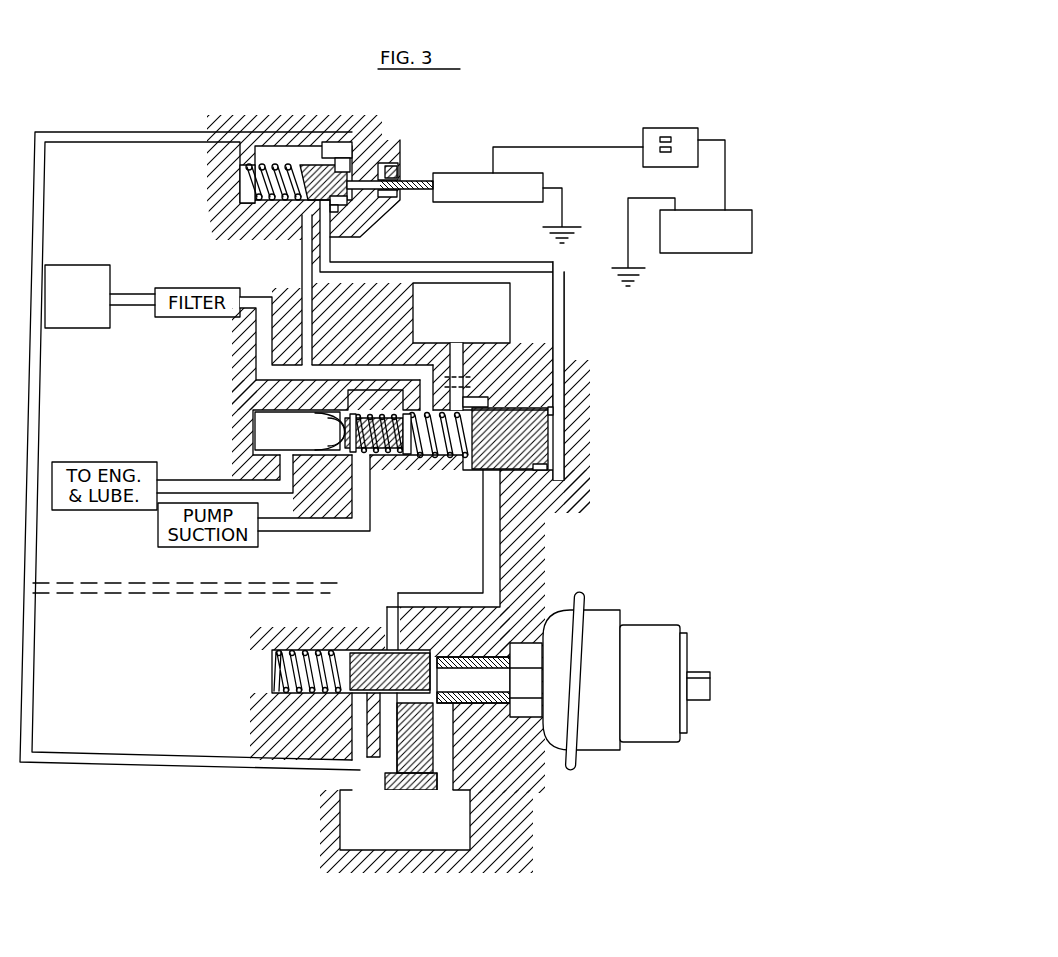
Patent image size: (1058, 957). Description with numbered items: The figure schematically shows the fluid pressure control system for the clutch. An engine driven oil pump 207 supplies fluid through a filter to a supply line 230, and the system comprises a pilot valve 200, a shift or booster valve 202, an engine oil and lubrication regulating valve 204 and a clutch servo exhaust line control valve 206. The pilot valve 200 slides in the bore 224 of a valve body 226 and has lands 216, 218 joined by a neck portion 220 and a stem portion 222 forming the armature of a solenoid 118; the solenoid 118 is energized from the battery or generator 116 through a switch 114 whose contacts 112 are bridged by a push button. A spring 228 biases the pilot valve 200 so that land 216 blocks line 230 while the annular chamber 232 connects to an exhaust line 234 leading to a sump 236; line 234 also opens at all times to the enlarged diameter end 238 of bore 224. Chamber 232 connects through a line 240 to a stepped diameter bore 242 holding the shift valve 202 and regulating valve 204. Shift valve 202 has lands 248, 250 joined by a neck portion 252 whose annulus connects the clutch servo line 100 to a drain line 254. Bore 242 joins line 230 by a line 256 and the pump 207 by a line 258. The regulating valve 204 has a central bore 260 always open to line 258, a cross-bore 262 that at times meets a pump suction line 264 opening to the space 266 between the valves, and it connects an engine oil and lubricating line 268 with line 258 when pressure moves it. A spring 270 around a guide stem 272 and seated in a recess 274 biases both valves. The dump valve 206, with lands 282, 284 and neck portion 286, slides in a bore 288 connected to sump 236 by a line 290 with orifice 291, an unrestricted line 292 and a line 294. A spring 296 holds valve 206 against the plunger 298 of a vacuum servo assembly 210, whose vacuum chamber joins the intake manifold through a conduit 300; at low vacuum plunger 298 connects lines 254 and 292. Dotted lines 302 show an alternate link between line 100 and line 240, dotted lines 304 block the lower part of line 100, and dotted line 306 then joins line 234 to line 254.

The servo line 100 is at (467, 358).
The contacts 112 is at (677, 140).
The switch 114 is at (644, 124).
The vehicle battery or generator 116 is at (705, 253).
The solenoid 118 is at (457, 172).
The pilot valve 200 is at (306, 122).
The shift or booster valve 202 is at (564, 432).
The engine oil and lubrication regulating valve 204 is at (305, 458).
The clutch servo exhaust line control valve 206 is at (533, 727).
The engine driven oil pump 207 is at (83, 255).
The vacuum servo assembly 210 is at (653, 725).
The land 216 is at (300, 230).
The land 218 is at (396, 166).
The neck portion 220 is at (380, 162).
The stem portion 222 is at (420, 191).
The bore 224 is at (264, 146).
The valve body 226 is at (243, 128).
The spring 228 is at (240, 180).
The fluid pressure supply line 230 is at (306, 263).
The annular chamber 232 is at (340, 142).
The exhaust line 234 is at (99, 131).
The sump 236 is at (425, 838).
The enlarged diameter end 238 is at (240, 203).
The line 240 is at (564, 338).
The stepped diameter bore 242 is at (548, 467).
The land 248 is at (430, 410).
The land 250 is at (553, 413).
The neck portion 252 is at (503, 467).
The drain line 254 is at (499, 543).
The line 256 is at (352, 367).
The line 258 is at (253, 343).
The central bore 260 is at (297, 431).
The cross-bore 262 is at (333, 458).
The pump suction or inlet line 264 is at (287, 531).
The space 266 is at (363, 460).
The engine oil and lubricating line 268 is at (192, 474).
The spring 270 is at (425, 472).
The guide stem 272 is at (377, 462).
The recess 274 is at (450, 470).
The land 282 is at (350, 647).
The land 284 is at (388, 655).
The neck portion 286 is at (392, 650).
The bore 288 is at (308, 693).
The line 290 is at (385, 762).
The orifice 291 is at (388, 703).
The unrestricted line 292 is at (358, 742).
The line 294 is at (443, 767).
The spring 296 is at (268, 674).
The plunger 298 is at (448, 677).
The conduit 300 is at (693, 690).
The dotted lines 302 is at (436, 272).
The dotted lines 304 is at (473, 364).
The dotted line 306 is at (161, 585).